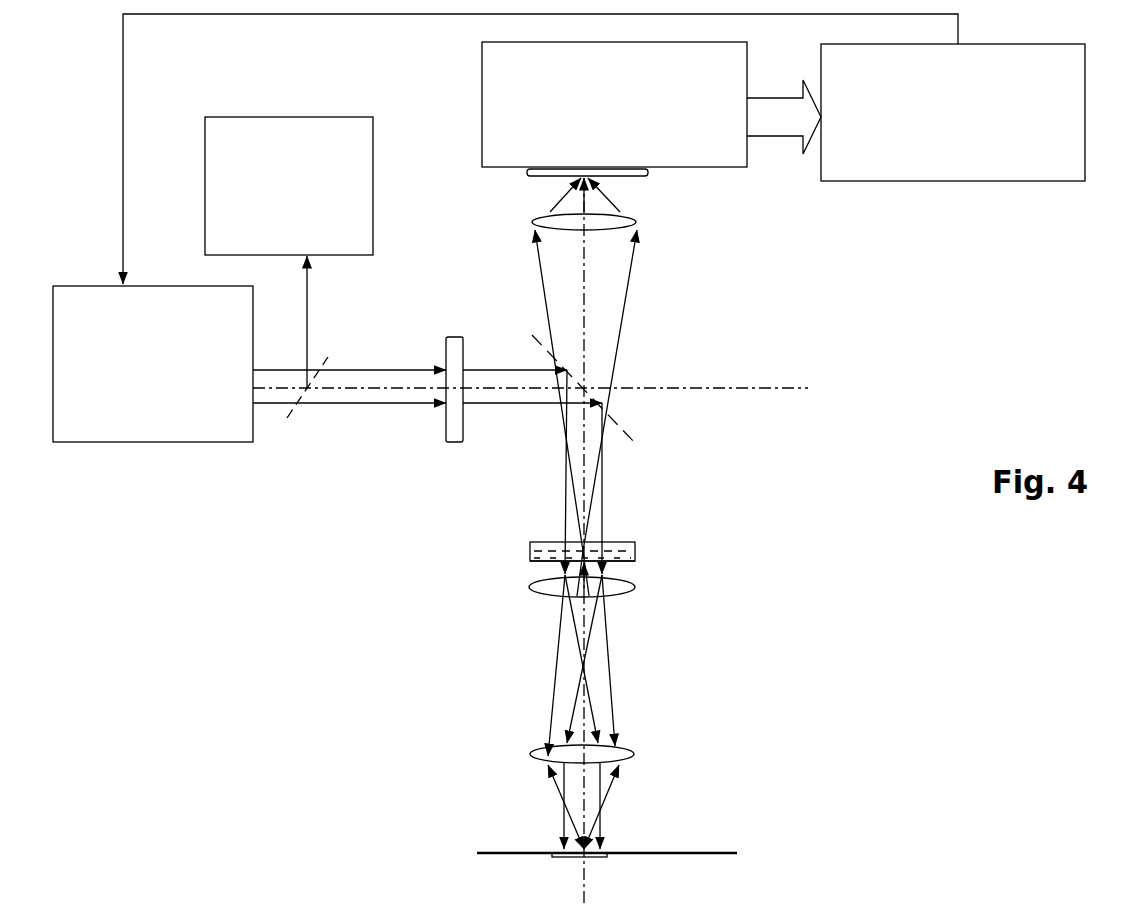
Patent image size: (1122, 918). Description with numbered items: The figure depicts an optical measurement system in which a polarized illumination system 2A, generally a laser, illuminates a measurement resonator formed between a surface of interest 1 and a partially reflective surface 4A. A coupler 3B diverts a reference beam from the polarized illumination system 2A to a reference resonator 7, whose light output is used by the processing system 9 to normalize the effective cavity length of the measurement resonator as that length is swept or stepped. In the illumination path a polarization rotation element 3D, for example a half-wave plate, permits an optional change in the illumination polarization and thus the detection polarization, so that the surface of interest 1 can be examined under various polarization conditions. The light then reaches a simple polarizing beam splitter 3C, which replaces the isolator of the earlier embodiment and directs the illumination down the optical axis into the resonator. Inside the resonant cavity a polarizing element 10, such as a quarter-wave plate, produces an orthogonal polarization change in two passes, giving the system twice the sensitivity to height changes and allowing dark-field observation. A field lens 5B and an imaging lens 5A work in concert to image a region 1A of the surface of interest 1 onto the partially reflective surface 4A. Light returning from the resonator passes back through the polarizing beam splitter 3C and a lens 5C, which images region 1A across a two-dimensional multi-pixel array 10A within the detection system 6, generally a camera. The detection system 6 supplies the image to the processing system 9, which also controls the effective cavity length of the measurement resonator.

The surface of interest 1 is at (720, 853).
The region of surface of interest 1A is at (594, 860).
The polarized illumination system 2A is at (98, 429).
The coupler 3B is at (328, 357).
The polarizing beam splitter 3C is at (635, 437).
The polarization rotation element 3D is at (455, 442).
The partially reflective surface 4A is at (635, 543).
The imaging lens 5A is at (633, 748).
The field lens 5B is at (634, 585).
The lens 5C is at (636, 218).
The detection system 6 is at (512, 129).
The reference resonator 7 is at (235, 234).
The processing system 9 is at (851, 129).
The polarizing element 10 is at (530, 565).
The two-dimensional multi-pixel array 10A is at (645, 176).